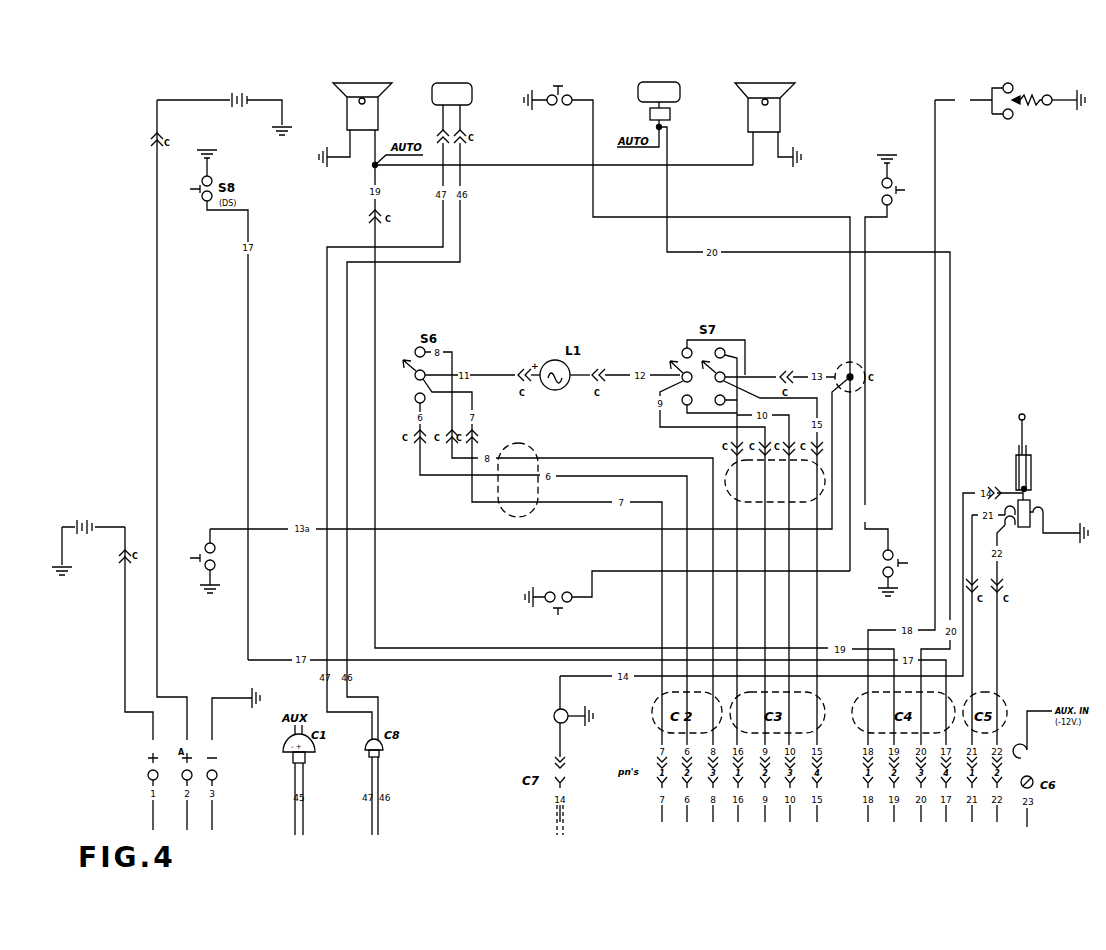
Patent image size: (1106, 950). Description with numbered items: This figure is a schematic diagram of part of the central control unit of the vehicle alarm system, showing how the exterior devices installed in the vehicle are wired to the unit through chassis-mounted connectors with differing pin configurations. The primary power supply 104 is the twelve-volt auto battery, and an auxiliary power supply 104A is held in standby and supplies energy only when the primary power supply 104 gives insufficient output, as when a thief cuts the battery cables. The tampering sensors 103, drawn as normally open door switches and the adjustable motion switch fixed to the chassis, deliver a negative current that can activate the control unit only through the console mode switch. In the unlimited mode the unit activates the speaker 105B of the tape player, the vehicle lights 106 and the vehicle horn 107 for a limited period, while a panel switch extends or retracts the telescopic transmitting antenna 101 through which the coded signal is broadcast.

The transmitting antenna 101 is at (1032, 476).
The tampering sensors 103 is at (566, 92).
The power supply 104 is at (236, 94).
The auxiliary power supply 104A is at (97, 494).
The speaker 105B is at (438, 83).
The vehicle lights 106 is at (347, 83).
The vehicle horn 107 is at (652, 82).